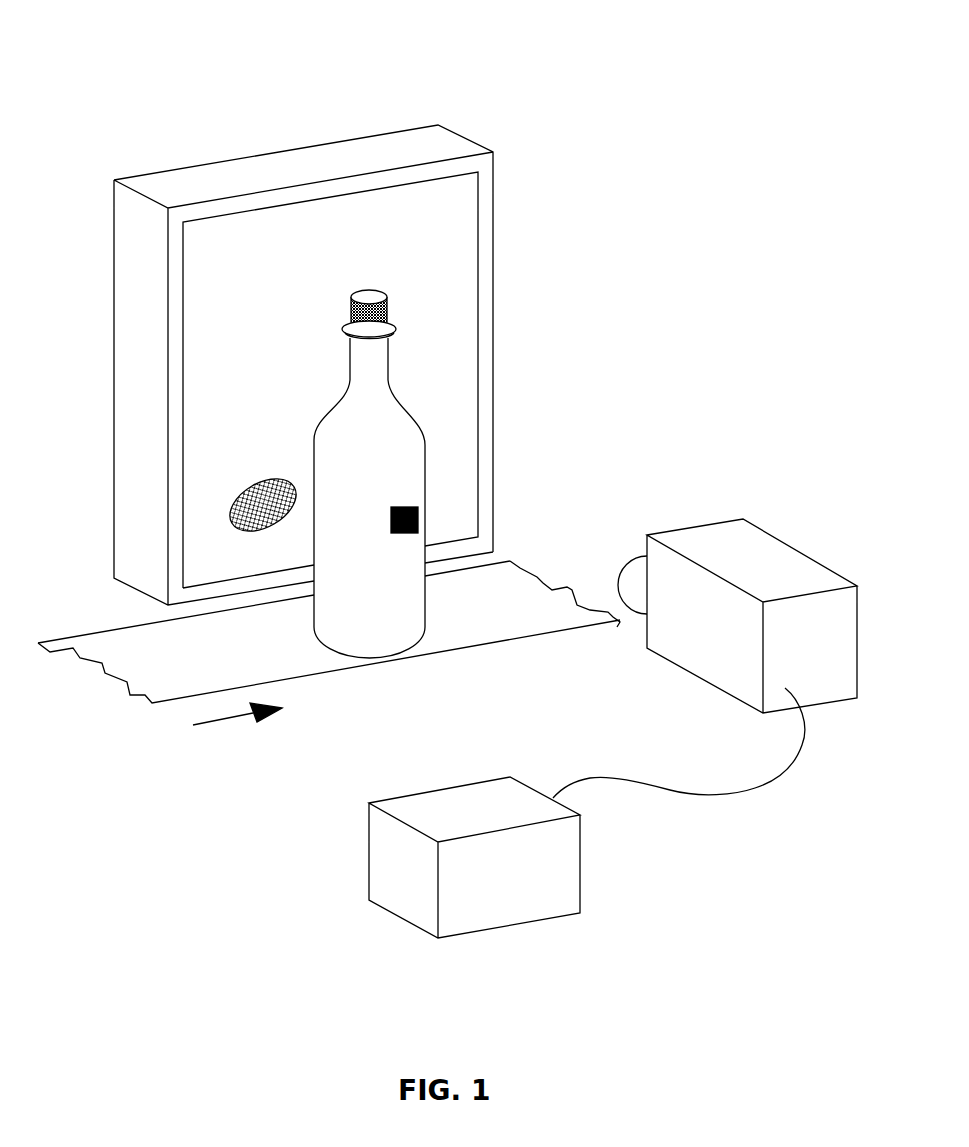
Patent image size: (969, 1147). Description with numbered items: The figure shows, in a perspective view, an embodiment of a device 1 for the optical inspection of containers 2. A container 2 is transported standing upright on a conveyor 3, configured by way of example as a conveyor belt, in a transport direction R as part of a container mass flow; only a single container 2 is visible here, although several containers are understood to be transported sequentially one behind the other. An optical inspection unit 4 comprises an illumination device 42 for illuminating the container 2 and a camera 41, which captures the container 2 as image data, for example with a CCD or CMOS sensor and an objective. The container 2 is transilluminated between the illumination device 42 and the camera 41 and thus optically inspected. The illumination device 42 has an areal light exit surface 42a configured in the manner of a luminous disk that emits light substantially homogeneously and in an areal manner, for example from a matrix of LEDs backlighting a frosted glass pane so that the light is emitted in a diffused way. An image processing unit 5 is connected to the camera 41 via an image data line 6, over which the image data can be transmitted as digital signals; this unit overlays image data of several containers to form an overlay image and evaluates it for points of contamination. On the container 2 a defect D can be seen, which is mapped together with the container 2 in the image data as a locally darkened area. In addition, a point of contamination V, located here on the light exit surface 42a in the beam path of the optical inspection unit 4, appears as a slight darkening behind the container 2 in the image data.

The device 1 is at (572, 76).
The container 2 is at (381, 495).
The conveyor 3 is at (308, 663).
The optical inspection unit 4 is at (715, 370).
The image processing unit 5 is at (573, 867).
The image data line 6 is at (770, 778).
The camera 41 is at (765, 546).
The illumination device 42 is at (495, 331).
The light exit surface 42a is at (465, 267).
The defect D is at (425, 508).
The point of contamination V is at (258, 481).
The direction R is at (237, 727).